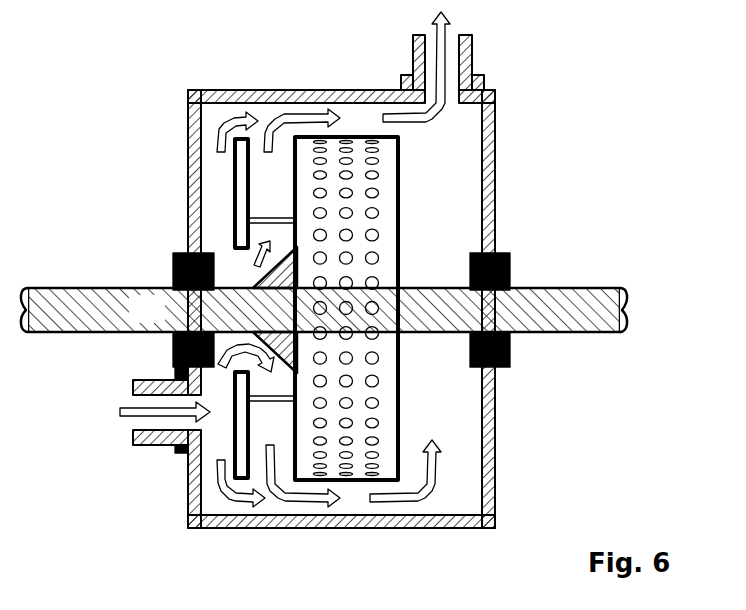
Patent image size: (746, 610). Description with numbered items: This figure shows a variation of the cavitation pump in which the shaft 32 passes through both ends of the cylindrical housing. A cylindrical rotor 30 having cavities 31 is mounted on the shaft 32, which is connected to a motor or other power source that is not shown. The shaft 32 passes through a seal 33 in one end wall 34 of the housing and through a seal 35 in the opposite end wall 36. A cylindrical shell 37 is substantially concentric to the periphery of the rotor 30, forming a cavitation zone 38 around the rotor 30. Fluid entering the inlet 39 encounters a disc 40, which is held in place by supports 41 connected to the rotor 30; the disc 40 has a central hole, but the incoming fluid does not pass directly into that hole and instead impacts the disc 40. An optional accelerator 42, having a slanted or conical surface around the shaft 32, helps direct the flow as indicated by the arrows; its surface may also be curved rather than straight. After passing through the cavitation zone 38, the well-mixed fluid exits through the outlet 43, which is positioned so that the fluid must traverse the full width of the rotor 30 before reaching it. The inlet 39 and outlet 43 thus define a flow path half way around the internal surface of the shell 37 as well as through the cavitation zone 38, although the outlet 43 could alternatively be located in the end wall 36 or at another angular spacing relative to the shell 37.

The cylindrical rotor 30 is at (400, 372).
The cavities 31 is at (348, 236).
The shaft 32 is at (162, 322).
The seal 33 is at (173, 284).
The end wall 34 is at (188, 210).
The seal 35 is at (510, 268).
The end wall 36 is at (495, 412).
The cylindrical shell 37 is at (333, 90).
The cavitation zone 38 is at (365, 120).
The inlet 39 is at (158, 395).
The disc 40 is at (233, 437).
The supports 41 is at (270, 220).
The accelerator 42 is at (262, 273).
The outlet 43 is at (472, 65).